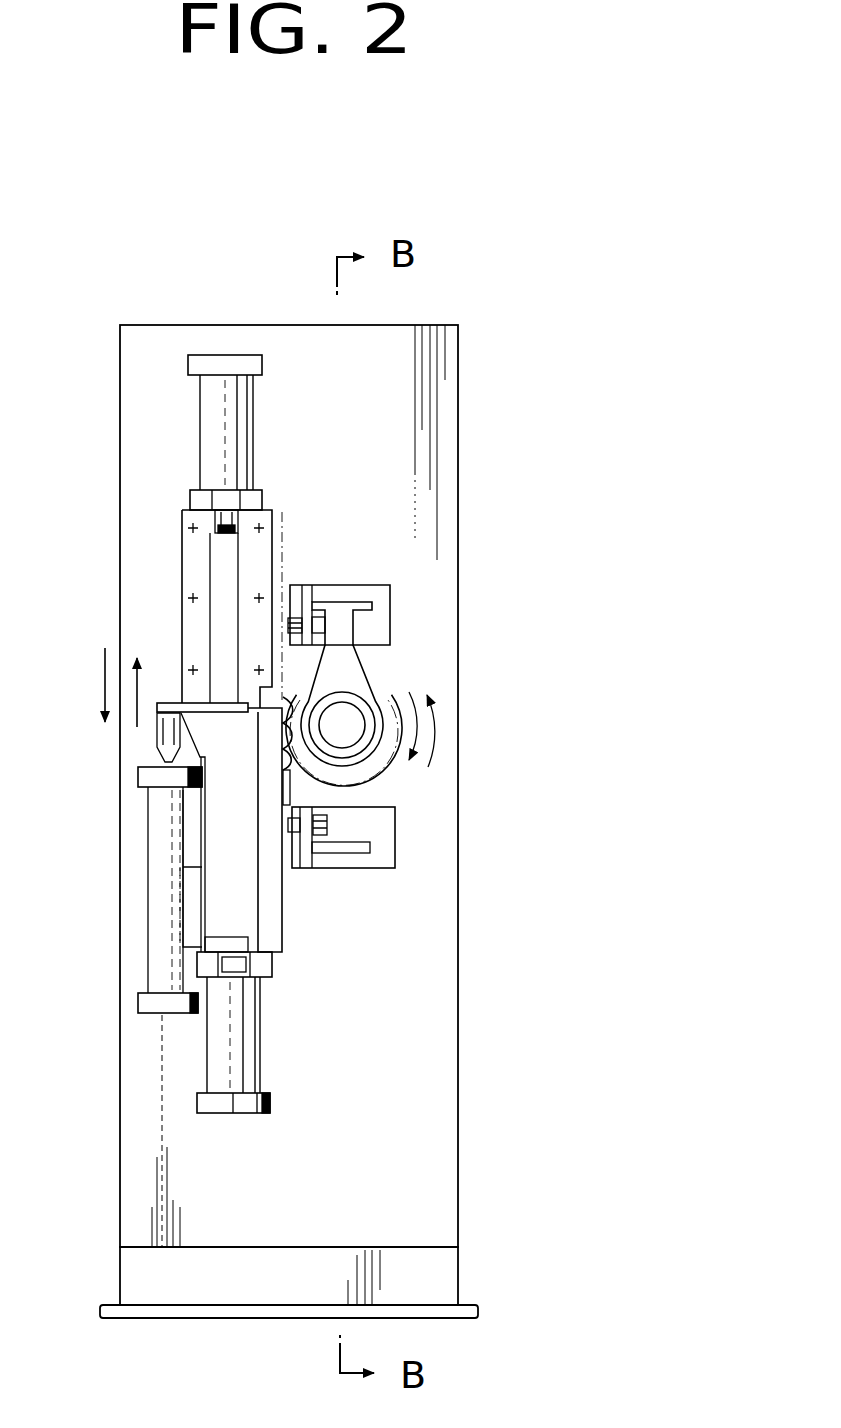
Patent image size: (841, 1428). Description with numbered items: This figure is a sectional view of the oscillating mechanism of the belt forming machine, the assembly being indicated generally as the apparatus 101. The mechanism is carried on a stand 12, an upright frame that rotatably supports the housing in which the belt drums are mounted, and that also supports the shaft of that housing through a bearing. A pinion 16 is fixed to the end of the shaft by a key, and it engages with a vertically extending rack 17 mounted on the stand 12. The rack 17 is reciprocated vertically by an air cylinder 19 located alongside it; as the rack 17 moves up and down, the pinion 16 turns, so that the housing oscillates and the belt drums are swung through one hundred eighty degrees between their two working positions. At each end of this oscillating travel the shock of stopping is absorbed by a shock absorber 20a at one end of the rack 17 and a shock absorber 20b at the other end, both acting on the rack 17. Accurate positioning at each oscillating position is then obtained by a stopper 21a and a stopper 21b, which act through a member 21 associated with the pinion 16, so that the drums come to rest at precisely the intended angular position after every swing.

The roller replacing apparatus 101 is at (144, 298).
The stand 12 is at (458, 487).
The pinion 16 is at (400, 733).
The rack 17 is at (268, 930).
The air cylinder 19 is at (152, 908).
The shock absorber 20a is at (248, 1055).
The shock absorber 20b is at (253, 405).
The member 21 is at (345, 667).
The stopper 21a is at (350, 853).
The stopper 21b is at (343, 603).